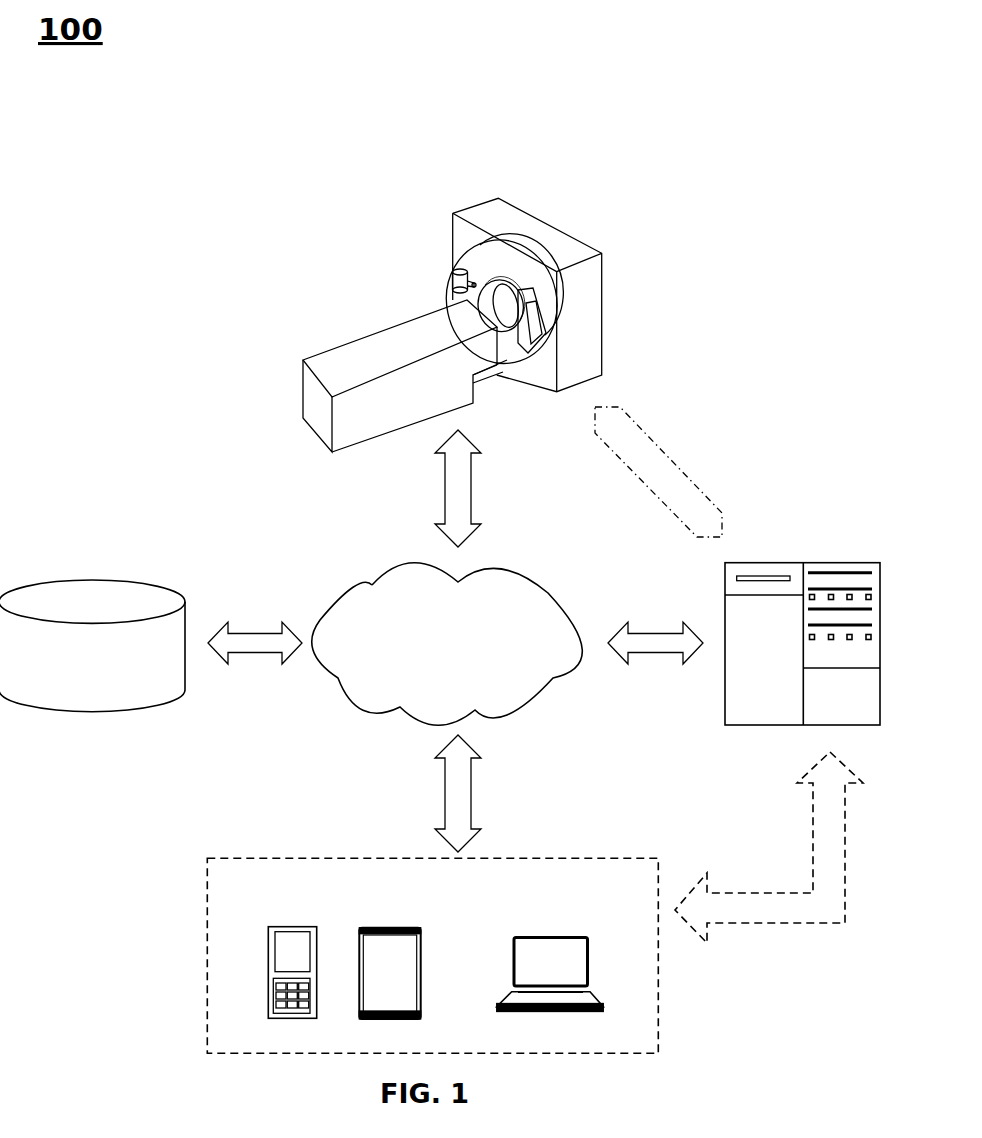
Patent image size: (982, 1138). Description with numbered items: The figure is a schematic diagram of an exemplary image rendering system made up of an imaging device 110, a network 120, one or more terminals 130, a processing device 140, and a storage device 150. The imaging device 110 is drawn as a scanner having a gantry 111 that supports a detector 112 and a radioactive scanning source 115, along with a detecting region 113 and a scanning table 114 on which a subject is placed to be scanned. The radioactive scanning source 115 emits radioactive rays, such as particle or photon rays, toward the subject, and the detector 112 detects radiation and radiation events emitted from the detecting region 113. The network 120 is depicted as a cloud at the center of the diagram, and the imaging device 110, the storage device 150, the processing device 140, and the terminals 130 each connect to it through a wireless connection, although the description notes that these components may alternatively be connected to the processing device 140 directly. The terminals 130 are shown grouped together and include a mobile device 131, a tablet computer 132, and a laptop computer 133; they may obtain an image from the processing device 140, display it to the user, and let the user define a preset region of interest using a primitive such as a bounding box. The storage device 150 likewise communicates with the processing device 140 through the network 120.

The imaging device 110 is at (358, 225).
The gantry 111 is at (525, 228).
The detector 112 is at (537, 322).
The detecting region 113 is at (508, 297).
The scanning table 114 is at (380, 343).
The radioactive scanning source 115 is at (457, 282).
The network 120 is at (480, 572).
The terminals 130 is at (493, 858).
The mobile device 131 is at (278, 927).
The tablet computer 132 is at (380, 927).
The laptop computer 133 is at (540, 932).
The processing device 140 is at (743, 560).
The storage device 150 is at (50, 578).